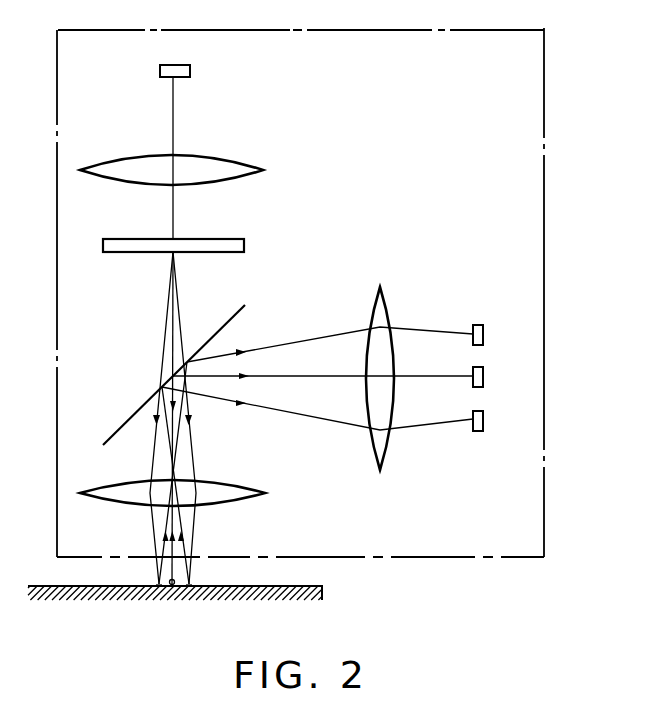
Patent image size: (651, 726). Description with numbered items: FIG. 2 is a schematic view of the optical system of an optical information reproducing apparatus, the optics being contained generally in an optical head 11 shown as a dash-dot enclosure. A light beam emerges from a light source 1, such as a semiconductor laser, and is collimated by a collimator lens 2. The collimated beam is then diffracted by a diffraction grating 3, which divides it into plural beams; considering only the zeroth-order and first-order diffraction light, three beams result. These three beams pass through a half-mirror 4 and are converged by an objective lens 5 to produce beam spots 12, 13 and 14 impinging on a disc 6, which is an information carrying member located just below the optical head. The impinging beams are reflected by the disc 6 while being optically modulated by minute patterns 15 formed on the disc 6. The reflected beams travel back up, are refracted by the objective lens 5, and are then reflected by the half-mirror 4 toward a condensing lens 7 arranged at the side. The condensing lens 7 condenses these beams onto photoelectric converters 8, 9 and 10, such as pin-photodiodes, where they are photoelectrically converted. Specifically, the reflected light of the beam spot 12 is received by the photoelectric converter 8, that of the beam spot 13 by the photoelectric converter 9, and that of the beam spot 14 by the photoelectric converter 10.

The light source 1 is at (190, 71).
The collimator lens 2 is at (263, 170).
The diffraction grating 3 is at (244, 246).
The half-mirror 4 is at (245, 306).
The objective lens 5 is at (265, 493).
The disc 6 is at (322, 596).
The condensing lens 7 is at (383, 468).
The photoelectric converter 8 is at (483, 332).
The photoelectric converter 9 is at (483, 378).
The photoelectric converter 10 is at (483, 425).
The optical head 11 is at (544, 282).
The beam spot 12 is at (156, 584).
The beam spot 13 is at (170, 590).
The beam spot 14 is at (188, 584).
The minute patterns 15 is at (305, 586).